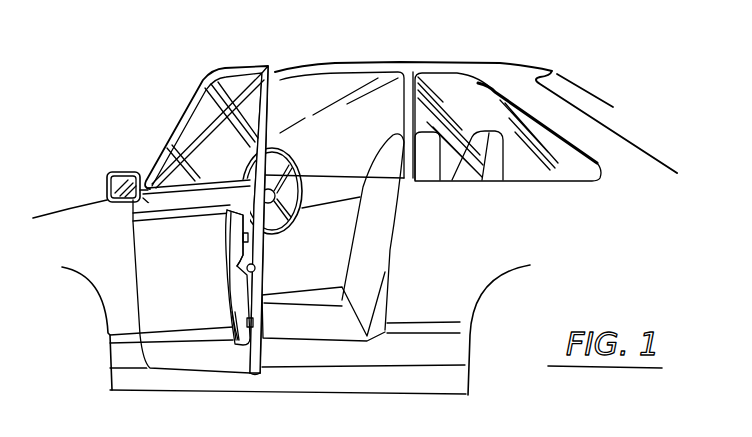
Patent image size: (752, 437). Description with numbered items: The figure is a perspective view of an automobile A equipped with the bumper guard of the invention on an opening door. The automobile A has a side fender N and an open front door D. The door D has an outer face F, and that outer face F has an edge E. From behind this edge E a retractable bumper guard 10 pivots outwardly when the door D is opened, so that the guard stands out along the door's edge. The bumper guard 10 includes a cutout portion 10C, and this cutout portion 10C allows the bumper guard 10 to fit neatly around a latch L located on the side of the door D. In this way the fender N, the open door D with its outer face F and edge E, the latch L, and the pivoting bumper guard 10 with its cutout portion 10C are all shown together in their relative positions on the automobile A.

The automobile A is at (384, 56).
The front door D is at (212, 244).
The side fender N is at (78, 213).
The latch L is at (256, 270).
The retractable bumper guard 10 is at (230, 296).
The cutout portion 10C is at (230, 265).
The outer face F is at (170, 325).
The edge E is at (247, 360).